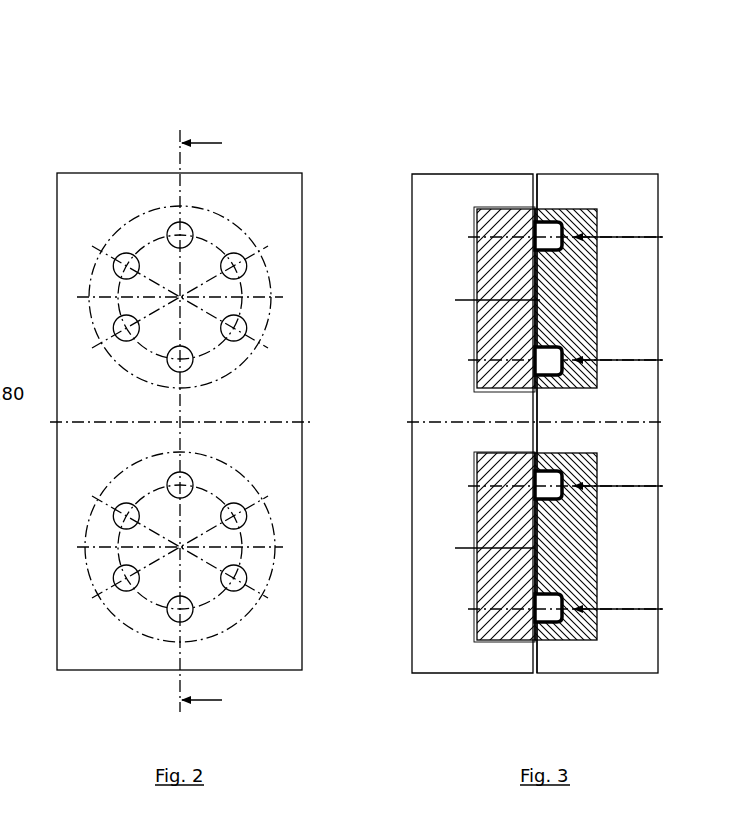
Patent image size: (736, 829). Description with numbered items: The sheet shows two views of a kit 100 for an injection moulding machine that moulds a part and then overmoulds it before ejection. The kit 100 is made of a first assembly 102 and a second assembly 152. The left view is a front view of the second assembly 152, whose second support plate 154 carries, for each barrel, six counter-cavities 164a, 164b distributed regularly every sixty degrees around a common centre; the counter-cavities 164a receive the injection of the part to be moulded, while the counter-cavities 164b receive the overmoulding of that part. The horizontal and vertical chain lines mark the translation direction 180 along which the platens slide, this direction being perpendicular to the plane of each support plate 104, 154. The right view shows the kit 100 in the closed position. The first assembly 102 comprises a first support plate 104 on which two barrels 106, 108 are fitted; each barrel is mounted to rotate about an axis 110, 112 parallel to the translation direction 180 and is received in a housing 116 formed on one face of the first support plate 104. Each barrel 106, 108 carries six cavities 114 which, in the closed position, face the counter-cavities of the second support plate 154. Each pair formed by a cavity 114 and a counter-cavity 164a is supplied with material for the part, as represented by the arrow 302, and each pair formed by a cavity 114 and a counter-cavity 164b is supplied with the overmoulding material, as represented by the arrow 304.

In FIG. 3, the kit 100 is at (637, 84).
In FIG. 3, the first assembly 102 is at (428, 124).
In FIG. 3, the first support plate 104 is at (415, 256).
In FIG. 3, the barrel 106 is at (490, 277).
In FIG. 3, the barrel 108 is at (490, 500).
In FIG. 3, the axis 110 is at (488, 317).
In FIG. 3, the axis 112 is at (462, 548).
In FIG. 3, the cavity 114 is at (550, 221).
In FIG. 3, the housing 116 is at (493, 638).
In FIG. 2, the second assembly 152 is at (196, 385).
In FIG. 3, the second assembly 152 is at (644, 137).
In FIG. 2, the second support plate 154 is at (271, 183).
In FIG. 3, the second support plate 154 is at (633, 193).
In FIG. 2, the counter-cavity 164a is at (138, 331).
In FIG. 3, the counter-cavity 164a is at (563, 232).
In FIG. 2, the counter-cavity 164b is at (182, 372).
In FIG. 3, the counter-cavity 164b is at (563, 375).
In FIG. 2, the translation direction 180 is at (181, 422).
In FIG. 3, the translation direction 180 is at (633, 422).
In FIG. 3, the arrow 302 is at (565, 250).
In FIG. 3, the arrow 304 is at (565, 350).